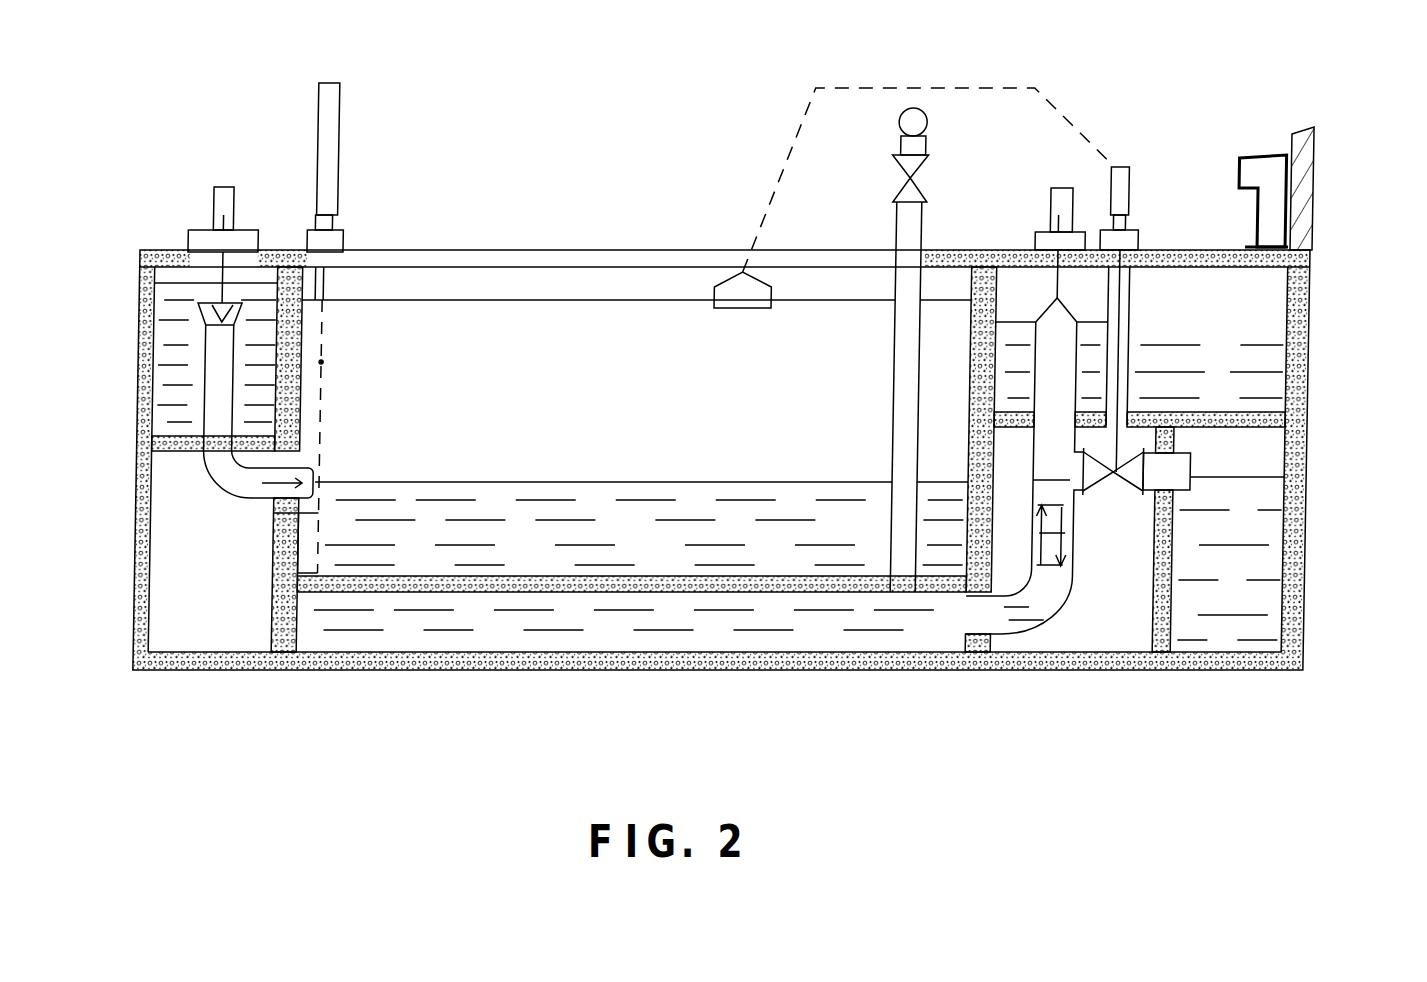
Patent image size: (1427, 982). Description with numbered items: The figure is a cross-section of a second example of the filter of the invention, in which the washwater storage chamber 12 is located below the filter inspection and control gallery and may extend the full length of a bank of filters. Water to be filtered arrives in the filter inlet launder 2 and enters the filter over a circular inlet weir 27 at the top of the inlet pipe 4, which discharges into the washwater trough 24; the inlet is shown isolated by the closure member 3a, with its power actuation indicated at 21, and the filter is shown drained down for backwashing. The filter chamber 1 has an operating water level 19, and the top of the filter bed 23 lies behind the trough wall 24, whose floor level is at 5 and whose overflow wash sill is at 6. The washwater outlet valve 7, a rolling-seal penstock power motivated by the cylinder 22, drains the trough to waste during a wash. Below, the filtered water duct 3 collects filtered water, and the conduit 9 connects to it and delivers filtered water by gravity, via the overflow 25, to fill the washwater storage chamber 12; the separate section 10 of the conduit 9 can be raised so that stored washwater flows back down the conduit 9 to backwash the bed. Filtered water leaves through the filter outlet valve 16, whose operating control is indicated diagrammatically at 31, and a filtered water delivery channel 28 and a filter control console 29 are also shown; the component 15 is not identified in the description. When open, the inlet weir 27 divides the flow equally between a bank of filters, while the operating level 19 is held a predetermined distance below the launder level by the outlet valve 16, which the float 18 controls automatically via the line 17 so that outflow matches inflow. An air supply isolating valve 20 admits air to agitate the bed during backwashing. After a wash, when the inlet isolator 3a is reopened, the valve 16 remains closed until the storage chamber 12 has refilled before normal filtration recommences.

The filter chamber 1 is at (721, 460).
The filter inlet launder 2 is at (170, 405).
The filtered water duct 3 is at (532, 625).
The inlet valve 3a is at (233, 342).
The inlet pipe 4 is at (205, 340).
The trough floor level 5 is at (706, 572).
The overflow wash sill 6 is at (446, 483).
The washwater outlet valve 7 is at (274, 545).
The conduit 9 is at (1077, 575).
The separate section of conduit 10 is at (1090, 330).
The washwater storage chamber 12 is at (1255, 357).
The level sensor 15 is at (1042, 208).
The filter outlet valve 16 is at (1143, 472).
The line 17 is at (947, 88).
The float 18 is at (762, 280).
The operating water level 19 is at (623, 300).
The air supply isolating valve 20 is at (922, 190).
The inlet valve power actuator 21 is at (235, 203).
The cylinder 22 is at (330, 148).
The top of filter bed 23 is at (775, 510).
The washwater receiving trough 24 is at (640, 535).
The overflow 25 is at (1077, 345).
The circular weir 27 is at (198, 303).
The filtered water delivery channel 28 is at (1258, 570).
The filter control console 29 is at (1267, 150).
The operating control for outlet valve 31 is at (1122, 160).